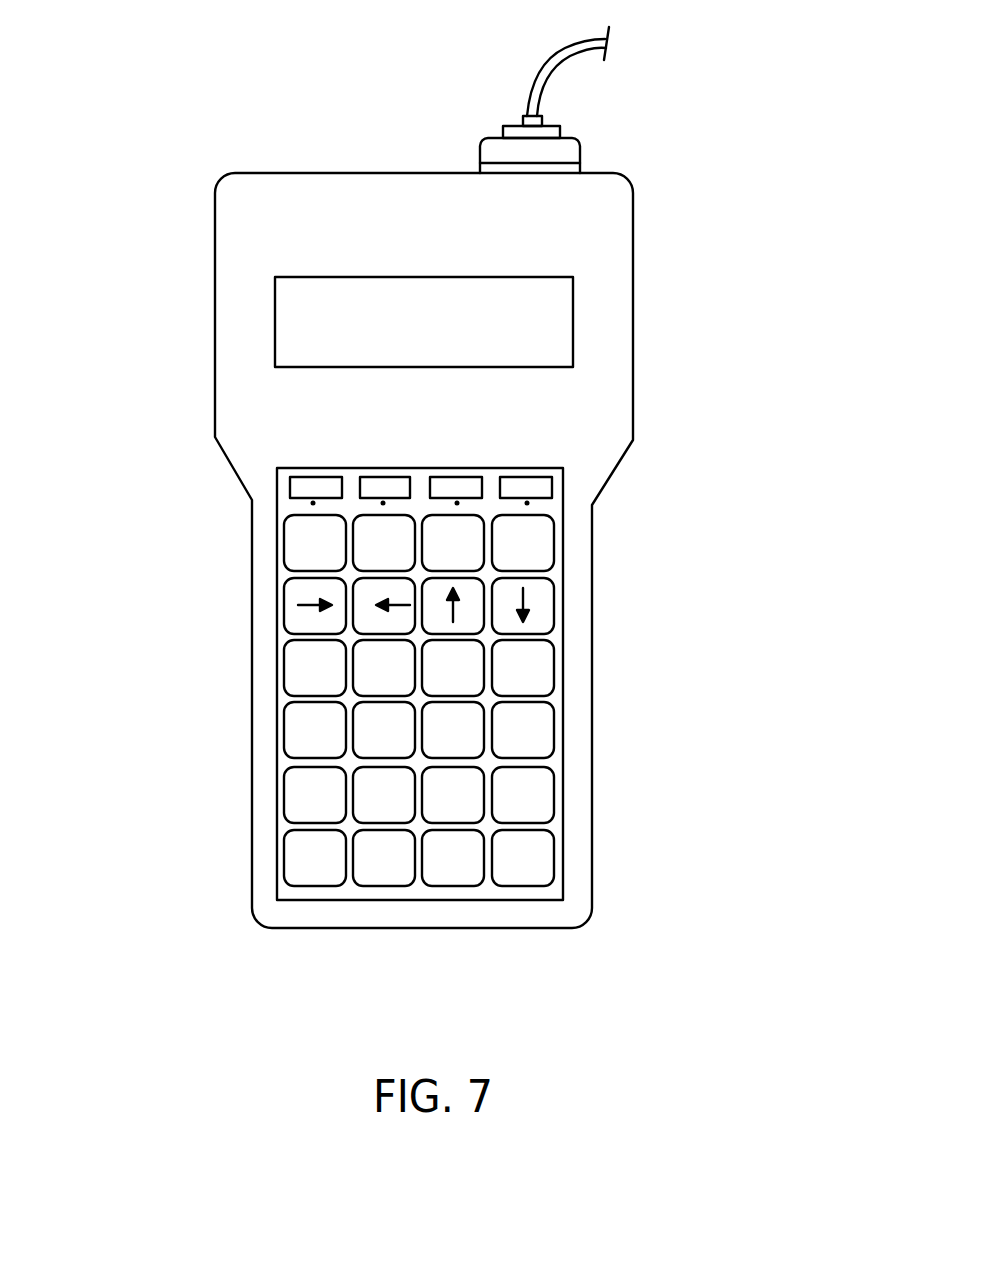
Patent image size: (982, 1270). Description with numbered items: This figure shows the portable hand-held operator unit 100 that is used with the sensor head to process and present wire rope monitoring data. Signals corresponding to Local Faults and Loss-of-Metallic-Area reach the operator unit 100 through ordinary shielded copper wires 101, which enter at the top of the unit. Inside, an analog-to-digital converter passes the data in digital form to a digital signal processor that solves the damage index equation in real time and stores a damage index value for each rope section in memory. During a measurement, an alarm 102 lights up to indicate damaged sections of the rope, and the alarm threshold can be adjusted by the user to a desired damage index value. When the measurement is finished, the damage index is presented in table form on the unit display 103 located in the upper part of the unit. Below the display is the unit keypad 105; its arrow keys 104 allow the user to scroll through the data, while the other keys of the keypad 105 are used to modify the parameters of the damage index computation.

The hand-held operator unit 100 is at (168, 553).
The shielded copper wires 101 is at (572, 53).
The alarm 102 is at (457, 503).
The unit display 103 is at (302, 342).
The arrow keys 104 is at (317, 585).
The unit keypad 105 is at (440, 892).